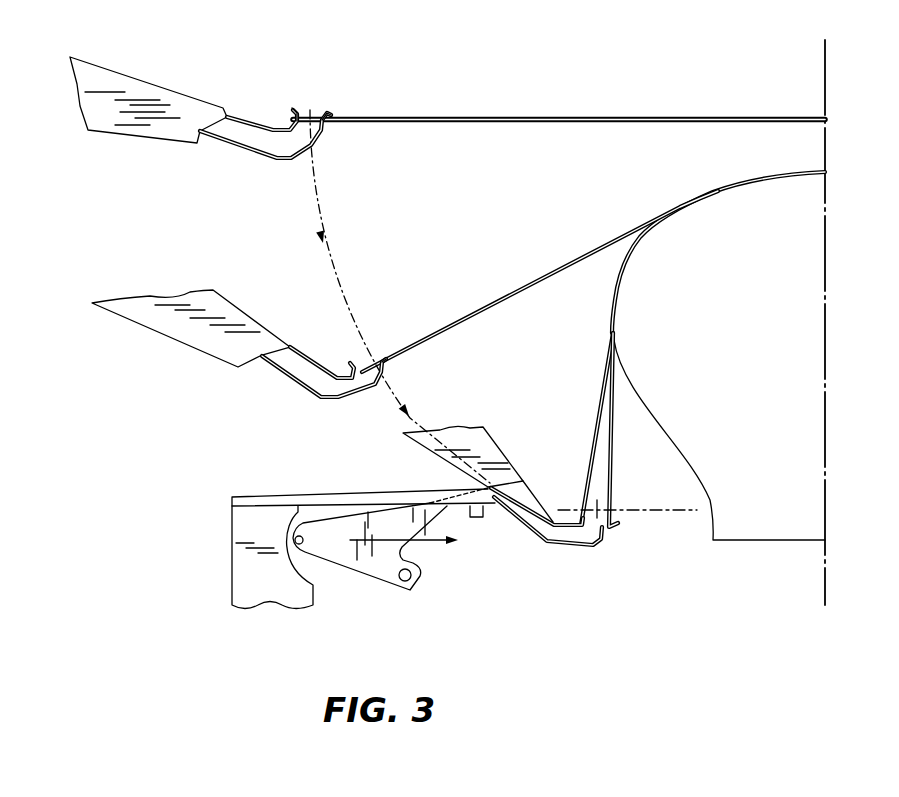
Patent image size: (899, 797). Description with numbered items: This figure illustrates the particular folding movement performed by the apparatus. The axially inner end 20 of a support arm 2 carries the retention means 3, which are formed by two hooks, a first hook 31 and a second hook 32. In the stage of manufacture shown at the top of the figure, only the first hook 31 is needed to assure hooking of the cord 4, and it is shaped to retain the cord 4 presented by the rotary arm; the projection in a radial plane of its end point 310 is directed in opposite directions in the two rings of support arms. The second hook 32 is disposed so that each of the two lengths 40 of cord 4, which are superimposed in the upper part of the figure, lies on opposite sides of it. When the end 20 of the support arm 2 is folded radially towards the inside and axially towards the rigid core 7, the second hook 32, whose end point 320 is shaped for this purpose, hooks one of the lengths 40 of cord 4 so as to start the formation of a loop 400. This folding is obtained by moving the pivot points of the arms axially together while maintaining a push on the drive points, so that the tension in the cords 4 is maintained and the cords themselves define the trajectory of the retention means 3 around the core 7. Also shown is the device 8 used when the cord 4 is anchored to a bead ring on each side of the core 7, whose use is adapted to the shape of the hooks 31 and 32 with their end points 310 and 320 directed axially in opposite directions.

The support arm 2 is at (118, 58).
The axially inner end of the support arm 20 is at (153, 92).
The retention means 3 is at (392, 297).
The first hook 31 is at (233, 118).
The second hook 32 is at (233, 146).
The end point of the first hook 310 is at (292, 108).
The end point of the second hook 320 is at (332, 112).
The cord 4 is at (563, 112).
The length of cord 40 is at (493, 112).
The loop 400 is at (603, 507).
The core 7 is at (800, 268).
The device 8 is at (208, 545).